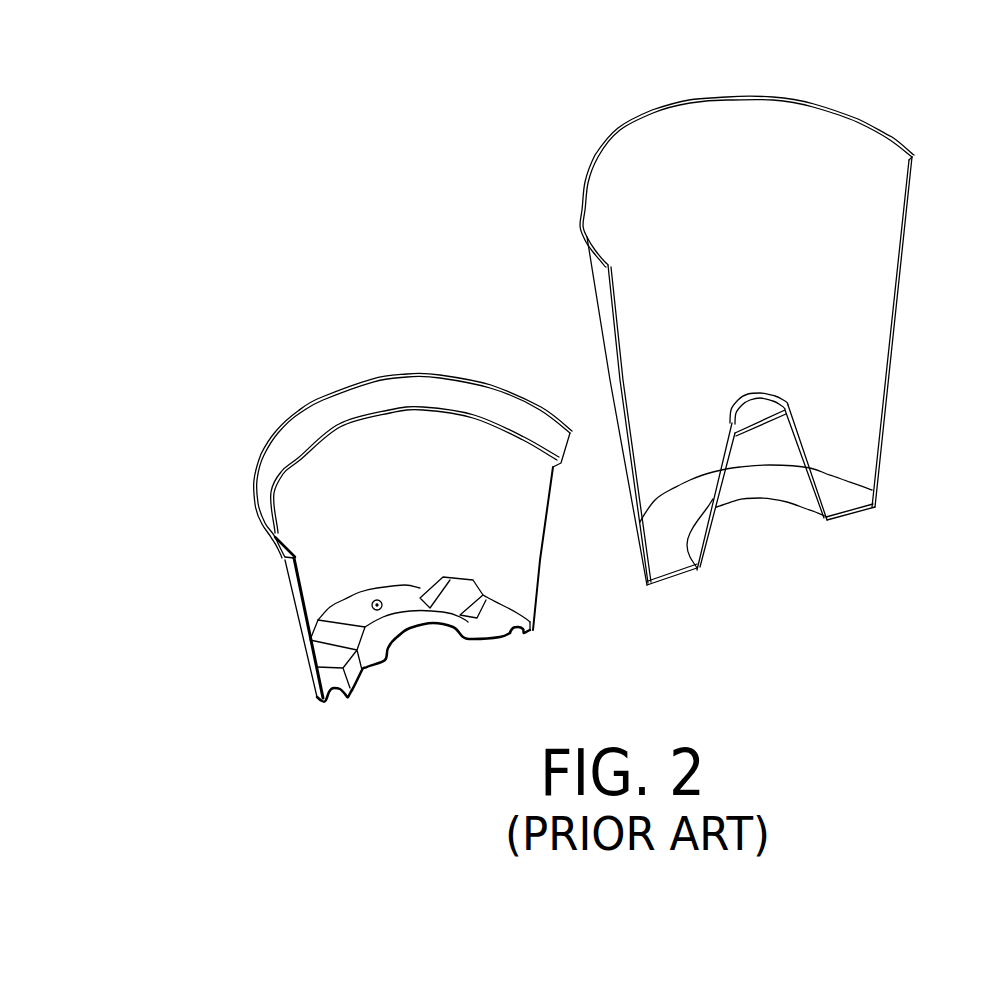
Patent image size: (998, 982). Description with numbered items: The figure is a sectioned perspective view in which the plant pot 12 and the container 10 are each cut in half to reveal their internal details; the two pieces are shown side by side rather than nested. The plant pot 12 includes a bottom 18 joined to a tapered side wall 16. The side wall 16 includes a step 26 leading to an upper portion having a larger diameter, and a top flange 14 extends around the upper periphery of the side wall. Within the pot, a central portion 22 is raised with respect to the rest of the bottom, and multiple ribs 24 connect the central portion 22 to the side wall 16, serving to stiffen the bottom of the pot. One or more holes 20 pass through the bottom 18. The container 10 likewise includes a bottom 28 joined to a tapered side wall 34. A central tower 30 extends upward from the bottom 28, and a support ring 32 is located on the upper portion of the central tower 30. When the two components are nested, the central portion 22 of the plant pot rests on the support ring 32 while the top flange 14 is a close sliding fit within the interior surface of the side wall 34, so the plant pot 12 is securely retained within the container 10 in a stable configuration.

The container 10 is at (670, 118).
The plant pot 12 is at (473, 383).
The top flange 14 is at (257, 480).
The tapered side wall 16 is at (310, 667).
The bottom 18 is at (345, 687).
The holes 20 is at (372, 600).
The central portion 22 is at (400, 635).
The ribs 24 is at (452, 590).
The step 26 is at (285, 575).
The bottom 28 is at (670, 565).
The central tower 30 is at (723, 497).
The support ring 32 is at (788, 407).
The tapered side wall 34 is at (898, 308).